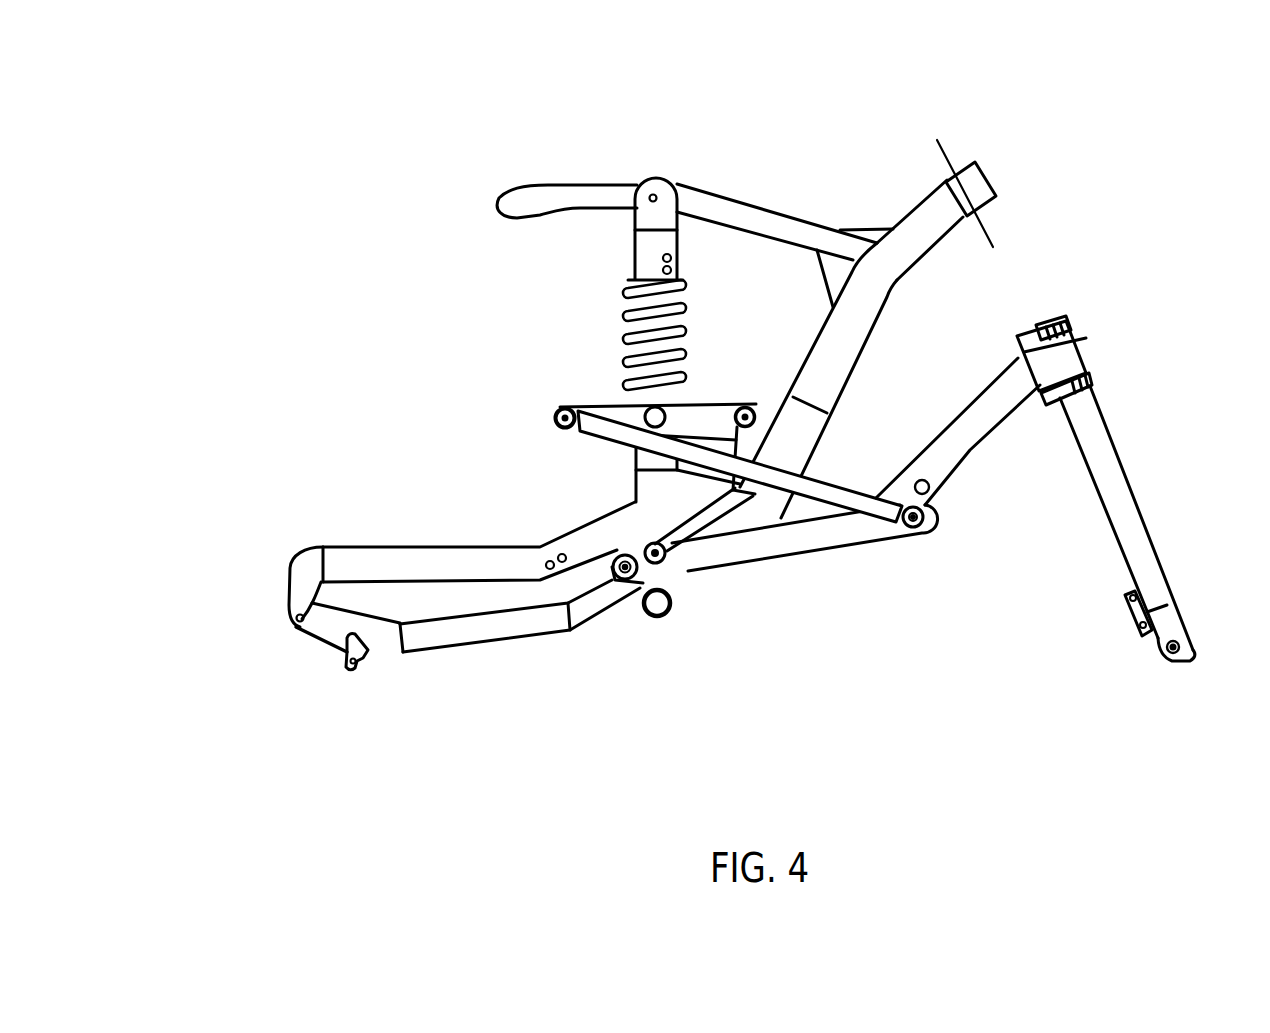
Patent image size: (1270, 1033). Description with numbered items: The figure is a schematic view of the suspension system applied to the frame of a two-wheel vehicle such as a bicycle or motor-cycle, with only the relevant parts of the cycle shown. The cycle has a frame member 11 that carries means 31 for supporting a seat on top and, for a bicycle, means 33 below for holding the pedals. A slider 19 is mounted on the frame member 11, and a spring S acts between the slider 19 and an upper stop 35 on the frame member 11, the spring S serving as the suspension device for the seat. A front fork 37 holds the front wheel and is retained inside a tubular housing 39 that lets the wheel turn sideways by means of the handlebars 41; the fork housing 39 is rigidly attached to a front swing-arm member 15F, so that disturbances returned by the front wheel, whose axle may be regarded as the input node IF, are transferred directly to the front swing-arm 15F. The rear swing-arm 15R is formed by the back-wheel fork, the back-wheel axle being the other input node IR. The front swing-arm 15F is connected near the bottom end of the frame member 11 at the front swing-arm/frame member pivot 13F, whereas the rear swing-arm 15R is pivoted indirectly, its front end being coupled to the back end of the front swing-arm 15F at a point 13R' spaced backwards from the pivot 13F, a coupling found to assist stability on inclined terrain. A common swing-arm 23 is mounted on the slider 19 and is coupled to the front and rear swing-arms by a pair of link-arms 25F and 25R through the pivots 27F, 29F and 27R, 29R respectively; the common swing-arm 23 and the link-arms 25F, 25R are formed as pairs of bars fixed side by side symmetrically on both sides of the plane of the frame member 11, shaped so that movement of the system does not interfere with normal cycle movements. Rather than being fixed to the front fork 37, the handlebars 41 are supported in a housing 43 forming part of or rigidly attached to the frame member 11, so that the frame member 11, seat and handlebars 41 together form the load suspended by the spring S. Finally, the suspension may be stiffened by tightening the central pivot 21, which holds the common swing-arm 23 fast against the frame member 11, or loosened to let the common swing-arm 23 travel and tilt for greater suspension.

The frame member 11 is at (650, 253).
The means for supporting a seat 31 is at (653, 194).
The handlebars 41 is at (950, 156).
The housing 43 is at (967, 197).
The upper stop 35 is at (633, 281).
The spring S is at (626, 316).
The slider 19 is at (634, 458).
The common swing-arm 23 is at (621, 406).
The central pivot 21 is at (658, 417).
The pivot 29R is at (749, 404).
The pivot 29F is at (555, 411).
The rear link-arm 25R is at (480, 562).
The pivot 27R is at (296, 616).
The rear swing-arm 15R is at (473, 628).
The pivot point 13R' is at (613, 663).
The front swing-arm/frame member pivot 13F is at (661, 558).
The means for holding the pedals 33 is at (658, 604).
The front link-arm 25F is at (835, 538).
The front swing-arm member 15F is at (823, 487).
The pivot 27F is at (919, 530).
The tubular housing 39 is at (1037, 366).
The front fork 37 is at (1128, 520).
The input node IR is at (361, 664).
The input node IF is at (1172, 656).